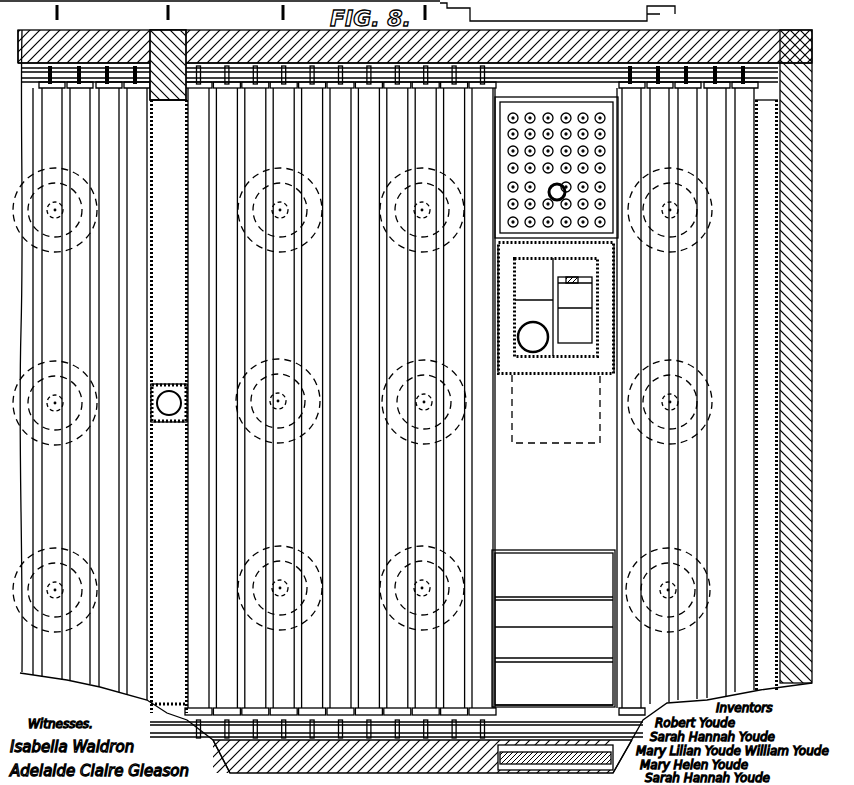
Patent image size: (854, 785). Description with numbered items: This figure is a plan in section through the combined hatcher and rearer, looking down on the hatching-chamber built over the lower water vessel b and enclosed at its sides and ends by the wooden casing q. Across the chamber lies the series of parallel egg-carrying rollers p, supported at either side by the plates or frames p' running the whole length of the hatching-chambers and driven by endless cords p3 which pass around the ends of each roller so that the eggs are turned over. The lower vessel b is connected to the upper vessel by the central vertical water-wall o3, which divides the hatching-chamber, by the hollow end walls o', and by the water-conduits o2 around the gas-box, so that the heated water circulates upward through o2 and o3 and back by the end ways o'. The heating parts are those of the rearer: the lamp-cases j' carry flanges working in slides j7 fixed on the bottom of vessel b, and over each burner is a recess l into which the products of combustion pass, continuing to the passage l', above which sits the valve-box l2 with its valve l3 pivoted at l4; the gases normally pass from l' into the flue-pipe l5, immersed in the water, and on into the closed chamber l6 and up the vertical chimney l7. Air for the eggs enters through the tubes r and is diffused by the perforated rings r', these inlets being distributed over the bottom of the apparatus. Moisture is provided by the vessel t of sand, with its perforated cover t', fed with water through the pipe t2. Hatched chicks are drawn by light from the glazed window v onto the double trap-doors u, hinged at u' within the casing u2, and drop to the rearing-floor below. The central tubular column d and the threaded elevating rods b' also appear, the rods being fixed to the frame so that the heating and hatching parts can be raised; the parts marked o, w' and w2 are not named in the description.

The water vessel b is at (415, 36).
The screw-rods b' is at (220, 15).
The wooden casing q is at (165, 30).
The flue-pipe l5 is at (235, 17).
The slides j7 is at (492, 16).
The lamp-cases j' is at (627, 17).
The egg-carrying rollers p is at (393, 398).
The side plates or frames p' is at (400, 400).
The endless cords p3 is at (40, 86).
The vertical water-wall o3 is at (168, 371).
The tubular column d is at (157, 404).
The hollow walls o' is at (750, 395).
The casing wall o is at (626, 308).
The water-conduits o2 is at (507, 345).
The air tubes r is at (362, 400).
The perforated rings r' is at (360, 422).
The moisture vessel t is at (555, 167).
The perforated cover t' is at (555, 170).
The water-supply pipe t2 is at (552, 188).
The combustion chamber or recess l is at (556, 364).
The gas passage l' is at (581, 350).
The valve-box l2 is at (556, 307).
The valve l3 is at (558, 277).
The valve pivot l4 is at (592, 310).
The closed chamber l6 is at (515, 298).
The chimney l7 is at (533, 330).
The trap-doors u is at (553, 628).
The trap-door hinges u' is at (554, 675).
The trap casing u2 is at (554, 689).
The shelf w' is at (554, 580).
The compartment w2 is at (554, 594).
The glazed window v is at (578, 757).